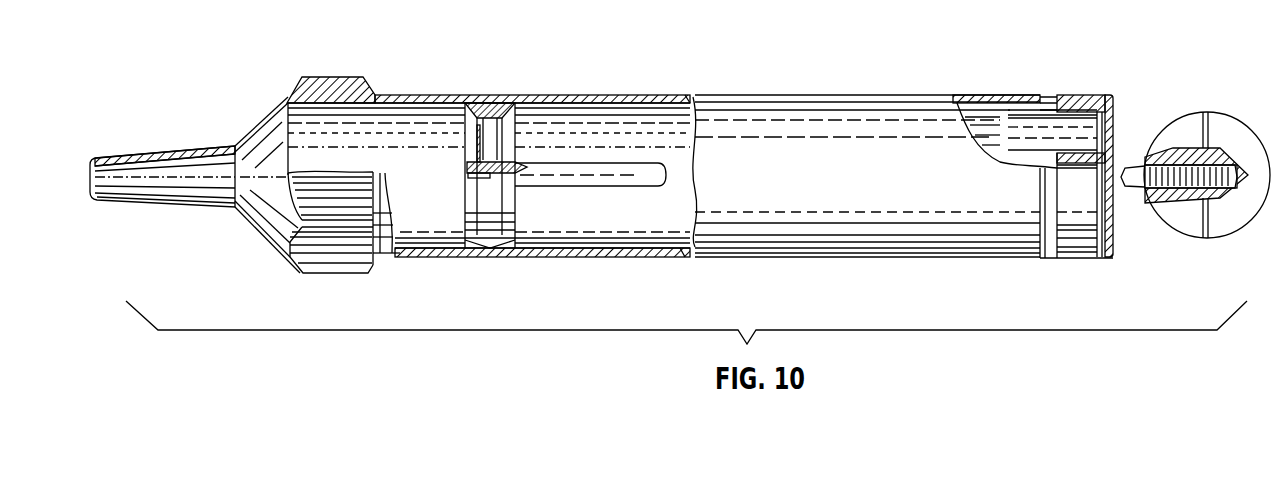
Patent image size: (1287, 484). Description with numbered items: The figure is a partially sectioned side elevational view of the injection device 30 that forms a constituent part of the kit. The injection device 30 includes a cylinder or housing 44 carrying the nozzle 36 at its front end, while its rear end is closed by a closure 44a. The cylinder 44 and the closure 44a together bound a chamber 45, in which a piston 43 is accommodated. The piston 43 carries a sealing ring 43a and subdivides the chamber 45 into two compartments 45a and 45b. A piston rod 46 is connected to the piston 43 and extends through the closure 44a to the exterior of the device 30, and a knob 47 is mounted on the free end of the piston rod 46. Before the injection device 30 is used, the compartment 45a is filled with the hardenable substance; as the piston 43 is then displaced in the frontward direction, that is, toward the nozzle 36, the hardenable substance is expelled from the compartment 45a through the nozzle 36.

The injection device 30 is at (852, 258).
The nozzle 36 is at (143, 153).
The piston 43 is at (477, 137).
The sealing ring 43a is at (498, 105).
The cylinder 44 is at (770, 227).
The closure 44a is at (1077, 238).
The chamber 45 is at (632, 118).
The compartment 45a is at (453, 233).
The compartment 45b is at (617, 227).
The piston rod 46 is at (557, 175).
The knob 47 is at (1220, 132).